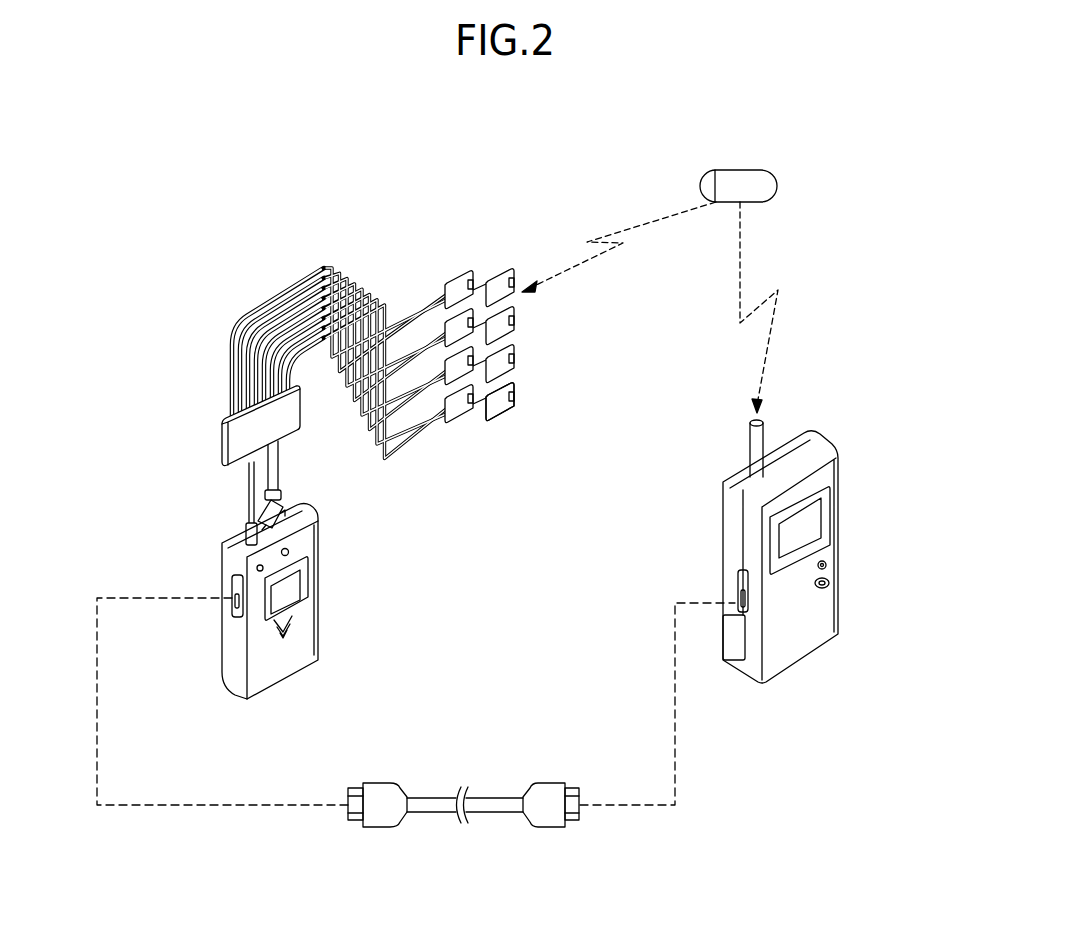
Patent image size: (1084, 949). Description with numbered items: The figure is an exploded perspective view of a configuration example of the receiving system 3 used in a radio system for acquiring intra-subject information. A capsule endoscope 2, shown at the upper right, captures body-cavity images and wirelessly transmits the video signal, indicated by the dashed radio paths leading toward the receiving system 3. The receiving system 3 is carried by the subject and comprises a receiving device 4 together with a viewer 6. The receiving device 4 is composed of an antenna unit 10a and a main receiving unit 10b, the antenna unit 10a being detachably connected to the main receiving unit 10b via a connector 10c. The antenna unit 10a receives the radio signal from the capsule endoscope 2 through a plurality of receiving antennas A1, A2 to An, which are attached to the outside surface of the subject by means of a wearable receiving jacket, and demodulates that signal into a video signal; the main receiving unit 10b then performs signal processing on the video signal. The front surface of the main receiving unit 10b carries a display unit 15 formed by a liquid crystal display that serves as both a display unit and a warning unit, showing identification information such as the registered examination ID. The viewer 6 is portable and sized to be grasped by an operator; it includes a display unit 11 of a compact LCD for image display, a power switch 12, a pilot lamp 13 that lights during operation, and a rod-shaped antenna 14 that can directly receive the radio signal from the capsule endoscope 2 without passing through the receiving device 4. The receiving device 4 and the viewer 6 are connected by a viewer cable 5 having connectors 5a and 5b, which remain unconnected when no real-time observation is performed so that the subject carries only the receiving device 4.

The capsule endoscope 2 is at (759, 178).
The receiving system 3 is at (231, 170).
The receiving device 4 is at (400, 509).
The viewer cable 5 is at (427, 797).
The connector 5a is at (356, 787).
The connector 5b is at (575, 785).
The viewer 6 is at (786, 655).
The antenna unit 10a is at (240, 450).
The main receiving unit 10b is at (310, 638).
The connector 10c is at (282, 510).
The display unit 11 is at (813, 525).
The power switch 12 is at (832, 586).
The pilot lamp 13 is at (830, 567).
The antenna 14 is at (752, 447).
The display unit 15 is at (293, 583).
The receiving antenna A1 is at (462, 283).
The receiving antenna A2 is at (503, 283).
The receiving antenna An is at (495, 409).